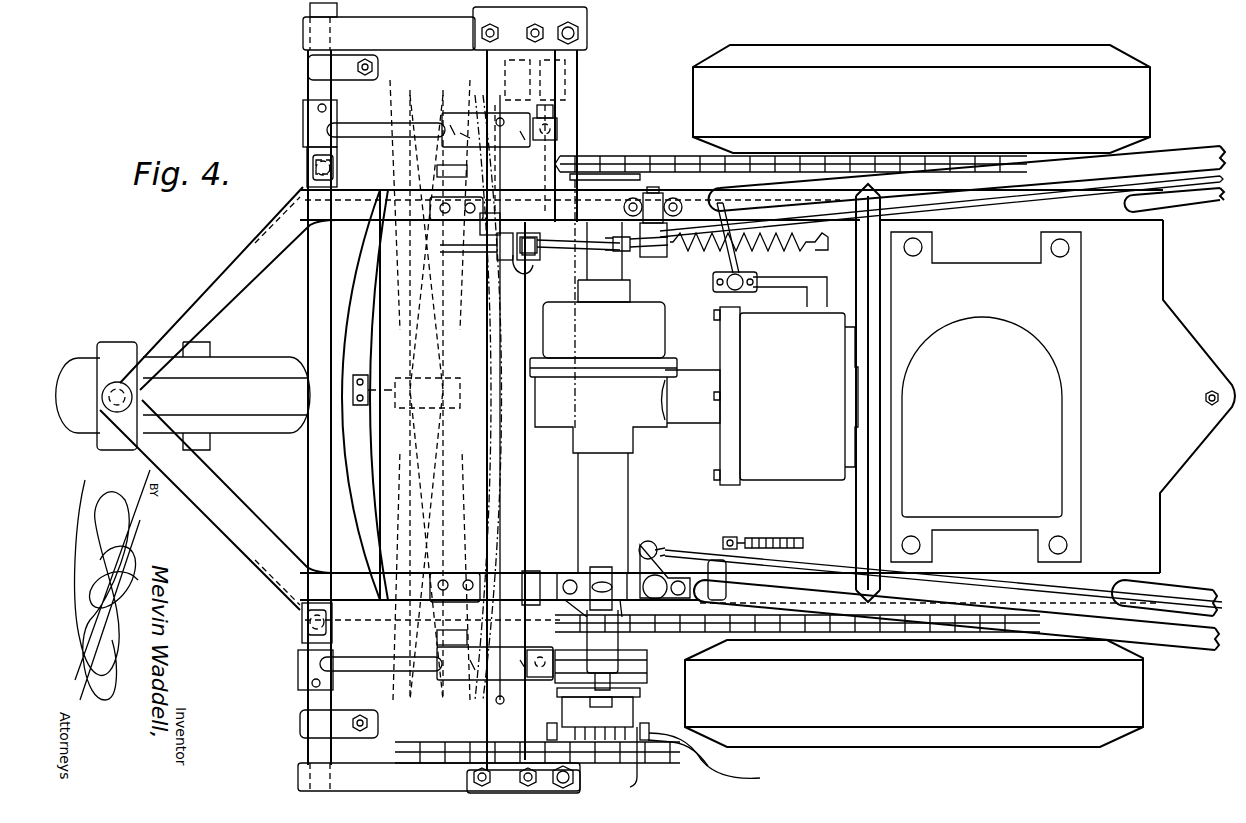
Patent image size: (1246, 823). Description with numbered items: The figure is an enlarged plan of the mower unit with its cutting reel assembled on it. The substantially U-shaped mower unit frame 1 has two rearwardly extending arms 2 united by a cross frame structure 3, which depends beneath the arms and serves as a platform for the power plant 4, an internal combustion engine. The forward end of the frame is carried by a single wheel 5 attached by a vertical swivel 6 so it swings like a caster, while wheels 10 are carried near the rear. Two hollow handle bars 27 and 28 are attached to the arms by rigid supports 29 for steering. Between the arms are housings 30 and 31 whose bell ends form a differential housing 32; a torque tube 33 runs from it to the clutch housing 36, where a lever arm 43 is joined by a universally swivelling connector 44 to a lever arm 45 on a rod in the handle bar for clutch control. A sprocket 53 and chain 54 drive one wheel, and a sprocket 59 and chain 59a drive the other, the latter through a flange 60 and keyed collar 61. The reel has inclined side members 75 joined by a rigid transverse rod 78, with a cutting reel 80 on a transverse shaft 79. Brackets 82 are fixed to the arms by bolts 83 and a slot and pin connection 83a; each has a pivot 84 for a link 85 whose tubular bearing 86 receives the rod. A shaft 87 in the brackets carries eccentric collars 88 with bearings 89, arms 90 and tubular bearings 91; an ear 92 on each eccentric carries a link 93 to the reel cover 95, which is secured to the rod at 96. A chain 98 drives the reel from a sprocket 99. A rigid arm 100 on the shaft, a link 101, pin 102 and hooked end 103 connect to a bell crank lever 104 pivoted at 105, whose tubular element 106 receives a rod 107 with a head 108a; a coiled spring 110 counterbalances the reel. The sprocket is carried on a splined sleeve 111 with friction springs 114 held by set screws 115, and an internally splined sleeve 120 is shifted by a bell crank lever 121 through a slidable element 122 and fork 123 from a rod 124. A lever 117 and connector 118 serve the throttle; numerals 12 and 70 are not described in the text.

The mower unit frame 1 is at (197, 295).
The arms 2 is at (355, 220).
The cross frame structure 3 is at (1165, 314).
The power plant 4 is at (986, 397).
The wheel 5 is at (240, 428).
The vertical swivel 6 is at (117, 382).
The wheels 10 is at (917, 396).
The bolt 12 is at (1204, 399).
The handle bar 27 is at (1175, 153).
The handle bar 28 is at (1178, 640).
The rigid supports 29 is at (1193, 204).
The housing 30 is at (602, 305).
The housing 31 is at (627, 497).
The differential housing 32 is at (650, 423).
The torque tube 33 is at (692, 373).
The clutch housing 36 is at (786, 396).
The lever arm 43 is at (790, 283).
The universally swivelling connector 44 is at (738, 291).
The lever arm 45 is at (740, 259).
The sprocket 53 is at (608, 165).
The chain 54 is at (658, 163).
The sprocket 59 is at (620, 641).
The chain 59a is at (710, 625).
The flange 60 is at (648, 653).
The collar 61 is at (648, 667).
The plate 70 is at (645, 684).
The side members 75 is at (385, 31).
The transverse rod 78 is at (310, 303).
The transverse shaft 79 is at (440, 50).
The cutting reel 80 is at (366, 521).
The brackets 82 is at (421, 219).
The bolts 83 is at (338, 131).
The slot and pin connection 83a is at (557, 266).
The pivot 84 is at (308, 173).
The link 85 is at (310, 161).
The tubular bearing 86 is at (310, 151).
The shaft 87 is at (505, 474).
The eccentric collar 88 is at (440, 168).
The bearing 89 is at (500, 119).
The arm 90 is at (455, 146).
The tubular bearing 91 is at (310, 123).
The ear 92 is at (555, 141).
The link 93 is at (556, 113).
The reel cover 95 is at (365, 469).
The securing point 96 is at (372, 70).
The chain 98 is at (592, 760).
The sprocket 99 is at (708, 760).
The rigid arm 100 is at (518, 287).
The link 101 is at (532, 256).
The pin 102 is at (530, 232).
The hooked end 103 is at (507, 232).
The bell crank lever 104 is at (572, 253).
The pivot 105 is at (712, 216).
The tubular element 106 is at (650, 253).
The rod 107 is at (972, 215).
The head 108a is at (638, 251).
The coiled spring 110 is at (705, 261).
The sleeve 111 is at (653, 759).
The springs 114 is at (665, 756).
The set screws 115 is at (652, 736).
The lever 117 is at (712, 559).
The connector 118 is at (775, 539).
The internally splined sleeve 120 is at (625, 719).
The bell crank lever 121 is at (622, 568).
The slidable element 122 is at (568, 573).
The fork 123 is at (630, 698).
The rod 124 is at (955, 577).